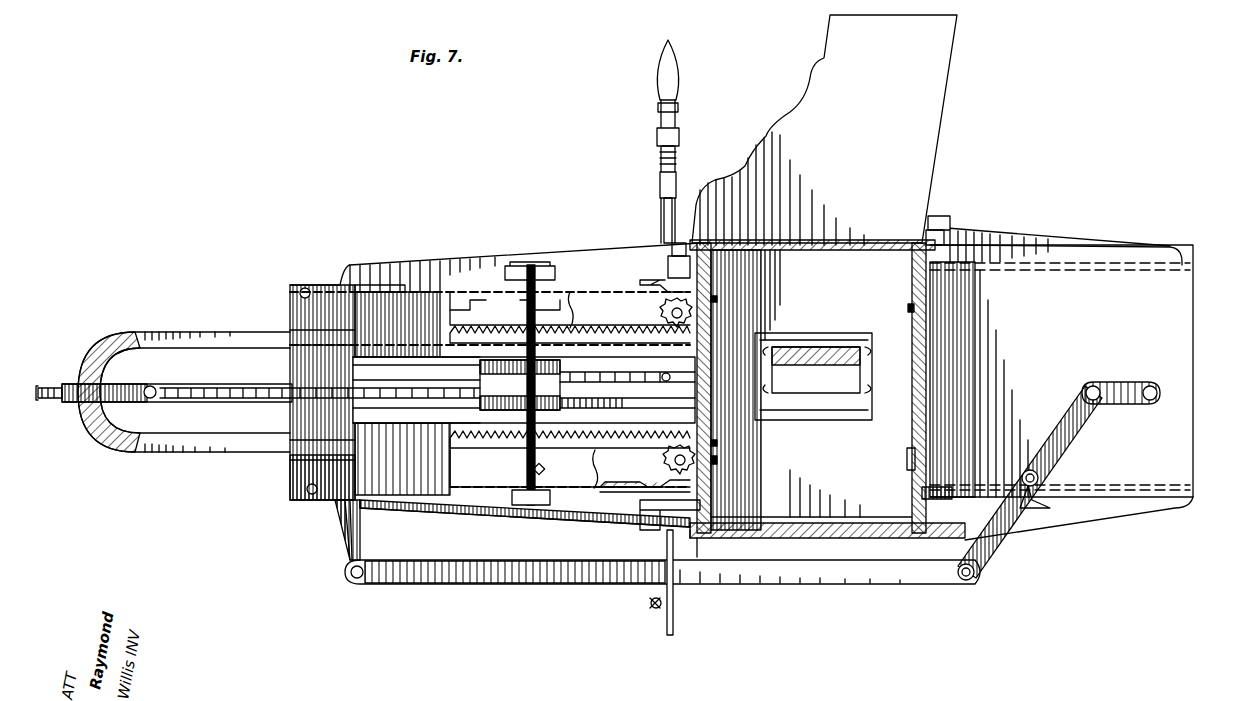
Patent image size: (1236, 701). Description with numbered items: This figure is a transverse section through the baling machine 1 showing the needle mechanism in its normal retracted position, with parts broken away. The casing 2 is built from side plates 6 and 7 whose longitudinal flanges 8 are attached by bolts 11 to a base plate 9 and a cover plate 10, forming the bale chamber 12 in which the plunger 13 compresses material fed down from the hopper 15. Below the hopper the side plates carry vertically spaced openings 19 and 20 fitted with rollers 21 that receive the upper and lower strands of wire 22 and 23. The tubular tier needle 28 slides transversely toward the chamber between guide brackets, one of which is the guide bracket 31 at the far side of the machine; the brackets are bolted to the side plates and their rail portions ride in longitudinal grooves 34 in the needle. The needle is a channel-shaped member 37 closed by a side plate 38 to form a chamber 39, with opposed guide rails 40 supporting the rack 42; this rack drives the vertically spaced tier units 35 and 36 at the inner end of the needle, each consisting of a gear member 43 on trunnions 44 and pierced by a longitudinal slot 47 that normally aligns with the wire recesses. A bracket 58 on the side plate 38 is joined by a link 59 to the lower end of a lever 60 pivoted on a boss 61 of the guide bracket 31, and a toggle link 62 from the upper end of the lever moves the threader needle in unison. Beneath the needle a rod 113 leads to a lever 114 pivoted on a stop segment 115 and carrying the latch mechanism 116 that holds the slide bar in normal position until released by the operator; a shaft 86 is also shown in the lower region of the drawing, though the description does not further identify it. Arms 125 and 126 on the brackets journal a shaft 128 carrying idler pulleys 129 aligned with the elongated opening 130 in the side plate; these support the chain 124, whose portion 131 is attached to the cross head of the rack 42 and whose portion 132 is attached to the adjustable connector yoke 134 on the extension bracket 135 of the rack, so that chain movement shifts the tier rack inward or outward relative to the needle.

The baling machine 1 is at (940, 128).
The casing portion 2 is at (1193, 265).
The side plate 6 is at (718, 443).
The side plate 7 is at (910, 470).
The longitudinal flanges 8 is at (690, 535).
The base plate 9 is at (845, 540).
The cover plate 10 is at (812, 385).
The bolts 11 is at (690, 230).
The bale chamber 12 is at (832, 268).
The plunger 13 is at (856, 268).
The hopper 15 is at (925, 170).
The opening 19 is at (908, 306).
The opening 20 is at (910, 453).
The rollers 21 is at (908, 318).
The wire strand 22 is at (712, 314).
The wire strand 23 is at (718, 460).
The tier needle 28 is at (290, 285).
The guide bracket 31 is at (465, 520).
The longitudinal grooves 34 is at (388, 285).
The tier unit 35 is at (660, 318).
The tier unit 36 is at (660, 488).
The channel-shaped member 37 is at (612, 500).
The side plate 38 is at (292, 472).
The chamber 39 is at (672, 478).
The guide rail 40 is at (570, 469).
The rack 42 is at (584, 324).
The gear member 43 is at (662, 276).
The trunnions 44 is at (722, 292).
The longitudinal slot 47 is at (718, 303).
The bracket 58 is at (345, 538).
The link 59 is at (590, 588).
The lever 60 is at (990, 540).
The boss 61 is at (1040, 487).
The toggle link 62 is at (1128, 392).
The shaft 86 is at (687, 582).
The rod 113 is at (650, 608).
The lever 114 is at (660, 178).
The stop segment 115 is at (663, 213).
The latch mechanism 116 is at (662, 146).
The chain 124 is at (282, 378).
The arm 125 is at (522, 270).
The arm 126 is at (518, 507).
The shaft 128 is at (520, 300).
The idler pulleys 129 is at (385, 384).
The rectangular-shaped opening 130 is at (405, 360).
The chain portion 131 is at (470, 375).
The chain portion 132 is at (280, 408).
The adjustable connector yoke 134 is at (70, 398).
The extension bracket 135 is at (112, 398).